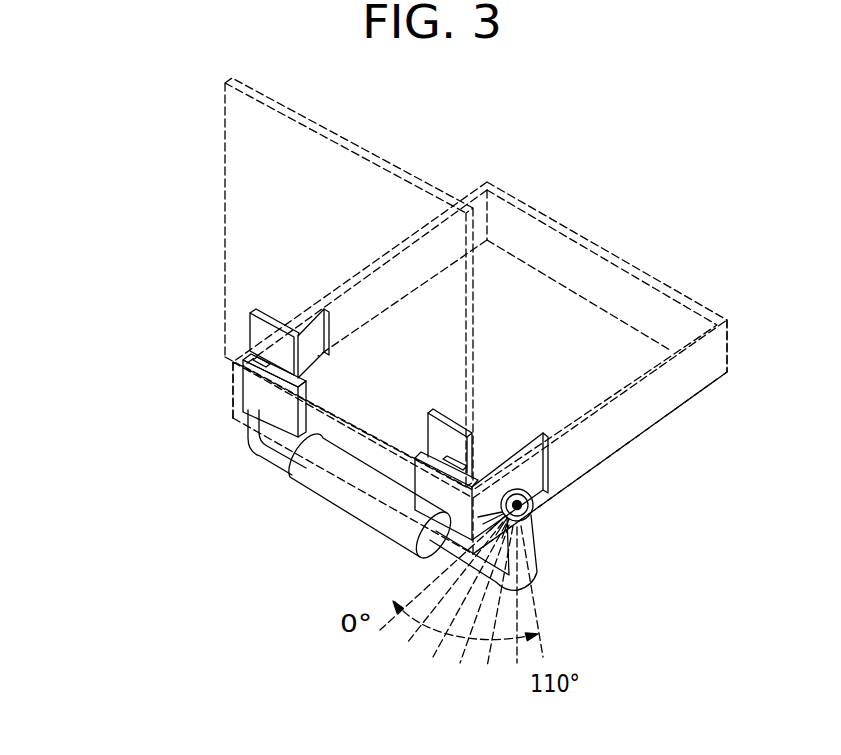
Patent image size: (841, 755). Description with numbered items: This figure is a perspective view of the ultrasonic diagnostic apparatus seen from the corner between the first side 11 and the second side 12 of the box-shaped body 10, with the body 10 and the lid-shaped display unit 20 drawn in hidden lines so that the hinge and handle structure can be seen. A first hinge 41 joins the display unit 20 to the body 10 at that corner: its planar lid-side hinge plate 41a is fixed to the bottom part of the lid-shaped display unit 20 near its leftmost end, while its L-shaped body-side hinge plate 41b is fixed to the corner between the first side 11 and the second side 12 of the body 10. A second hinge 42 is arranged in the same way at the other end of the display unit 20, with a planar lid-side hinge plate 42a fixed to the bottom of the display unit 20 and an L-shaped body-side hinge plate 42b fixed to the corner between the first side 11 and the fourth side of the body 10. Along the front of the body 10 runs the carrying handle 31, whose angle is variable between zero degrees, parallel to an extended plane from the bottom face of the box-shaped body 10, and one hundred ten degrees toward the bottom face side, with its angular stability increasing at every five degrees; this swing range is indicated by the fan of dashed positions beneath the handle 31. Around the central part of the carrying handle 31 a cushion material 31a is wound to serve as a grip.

The box-shaped body 10 is at (474, 350).
The first side 11 is at (233, 424).
The second side 12 is at (688, 374).
The lid-shaped display unit 20 is at (200, 194).
The carrying handle 31 is at (368, 500).
The cushion material 31a is at (360, 508).
The first hinge 41 is at (500, 432).
The lid-side hinge plate 41a is at (452, 440).
The body-side hinge plate 41b is at (538, 478).
The second hinge 42 is at (210, 370).
The lid-side hinge plate 42a is at (247, 332).
The body-side hinge plate 42b is at (253, 402).